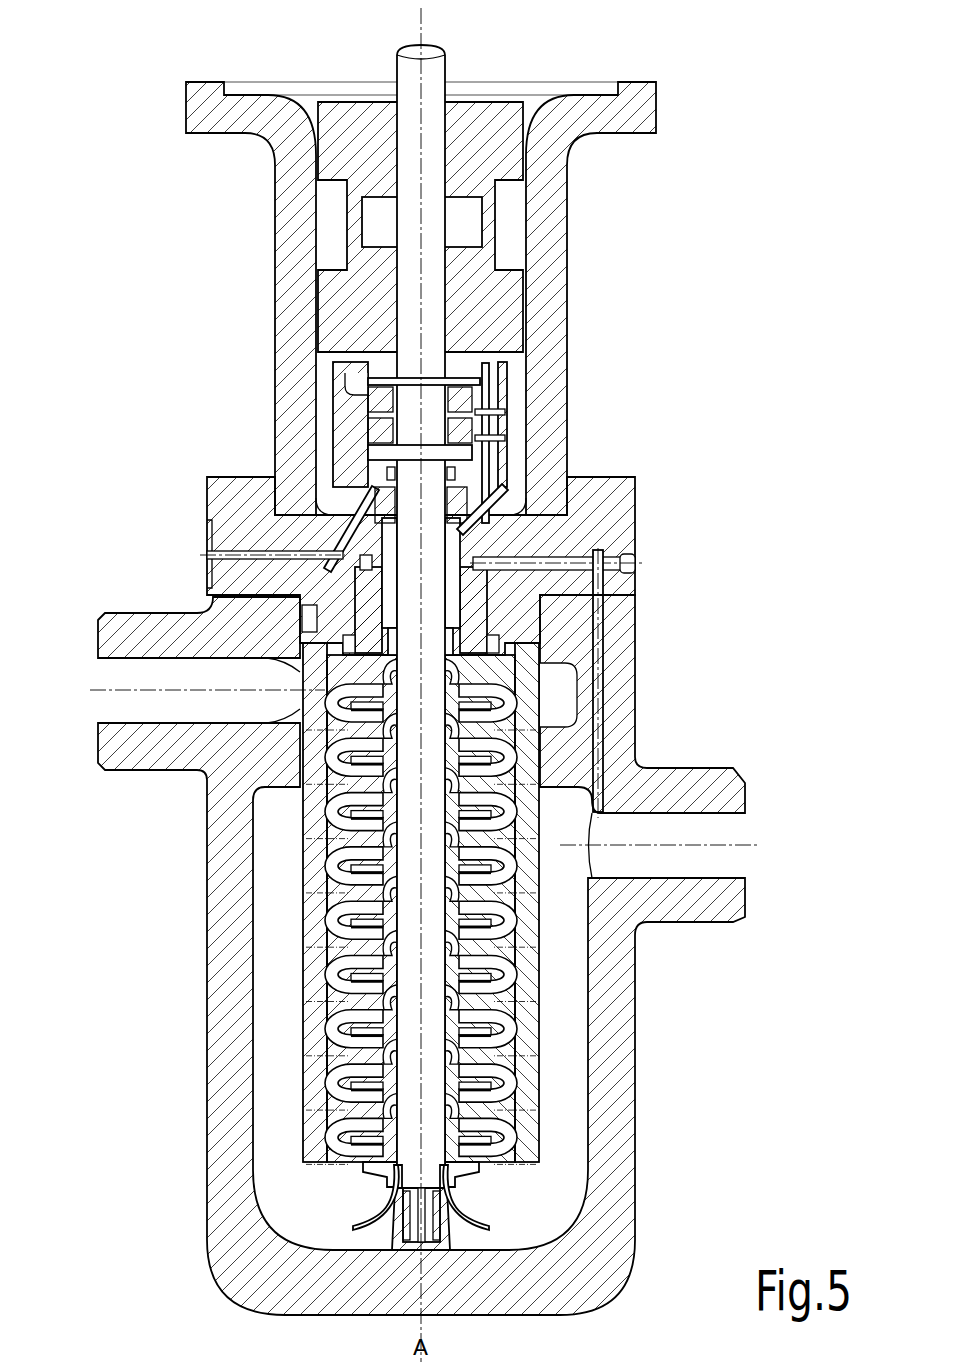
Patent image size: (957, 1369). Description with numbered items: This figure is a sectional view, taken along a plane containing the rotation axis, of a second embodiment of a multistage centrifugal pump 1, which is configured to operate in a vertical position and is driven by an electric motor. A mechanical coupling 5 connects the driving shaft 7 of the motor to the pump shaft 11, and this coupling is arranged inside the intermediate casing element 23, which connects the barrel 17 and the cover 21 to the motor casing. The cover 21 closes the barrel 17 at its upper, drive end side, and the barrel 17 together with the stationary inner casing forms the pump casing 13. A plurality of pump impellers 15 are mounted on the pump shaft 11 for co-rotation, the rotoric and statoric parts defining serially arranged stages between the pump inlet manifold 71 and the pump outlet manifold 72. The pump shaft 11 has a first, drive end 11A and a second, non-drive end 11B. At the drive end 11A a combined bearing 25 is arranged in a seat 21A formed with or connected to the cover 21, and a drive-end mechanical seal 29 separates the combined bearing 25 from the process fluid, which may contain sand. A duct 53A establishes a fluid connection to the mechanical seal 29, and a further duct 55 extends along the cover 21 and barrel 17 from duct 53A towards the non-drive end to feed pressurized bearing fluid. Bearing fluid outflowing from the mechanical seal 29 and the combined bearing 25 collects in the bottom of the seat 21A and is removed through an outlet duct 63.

The multistage centrifugal pump 1 is at (441, 685).
The mechanical coupling 5 is at (510, 116).
The driving shaft 7 is at (440, 66).
The pump shaft 11 is at (412, 547).
The first end 11A is at (413, 224).
The second end 11B is at (433, 1186).
The pump casing 13 is at (640, 1047).
The pump impellers 15 is at (322, 930).
The barrel 17 is at (620, 662).
The cover 21 is at (625, 577).
The seat 21A is at (335, 372).
The intermediate casing element 23 is at (555, 186).
The combined bearing 25 is at (508, 246).
The drive-end mechanical seal 29 is at (380, 487).
The duct 53A is at (503, 503).
The further duct 55 is at (568, 562).
The outlet duct 63 is at (258, 556).
The pump inlet manifold 71 is at (148, 757).
The pump outlet manifold 72 is at (720, 840).